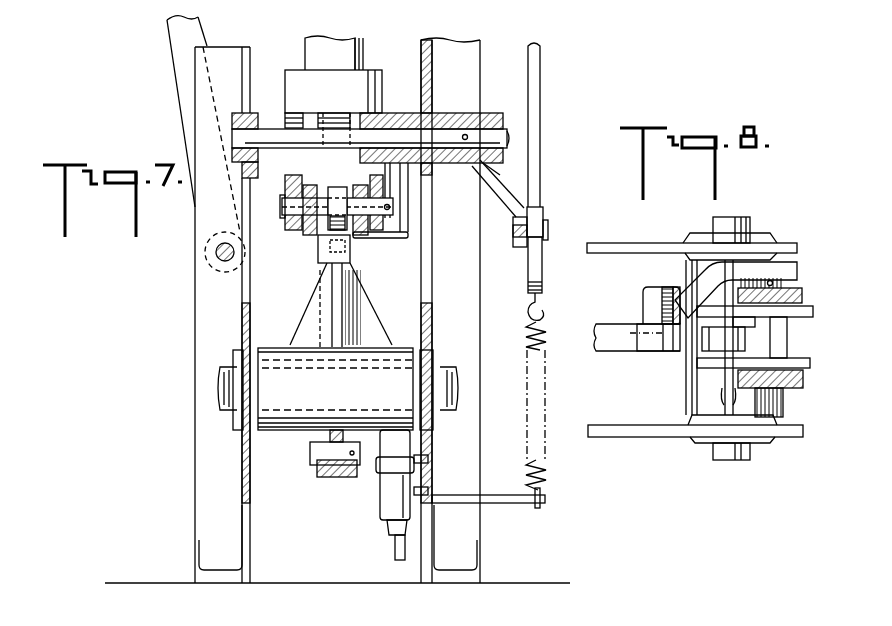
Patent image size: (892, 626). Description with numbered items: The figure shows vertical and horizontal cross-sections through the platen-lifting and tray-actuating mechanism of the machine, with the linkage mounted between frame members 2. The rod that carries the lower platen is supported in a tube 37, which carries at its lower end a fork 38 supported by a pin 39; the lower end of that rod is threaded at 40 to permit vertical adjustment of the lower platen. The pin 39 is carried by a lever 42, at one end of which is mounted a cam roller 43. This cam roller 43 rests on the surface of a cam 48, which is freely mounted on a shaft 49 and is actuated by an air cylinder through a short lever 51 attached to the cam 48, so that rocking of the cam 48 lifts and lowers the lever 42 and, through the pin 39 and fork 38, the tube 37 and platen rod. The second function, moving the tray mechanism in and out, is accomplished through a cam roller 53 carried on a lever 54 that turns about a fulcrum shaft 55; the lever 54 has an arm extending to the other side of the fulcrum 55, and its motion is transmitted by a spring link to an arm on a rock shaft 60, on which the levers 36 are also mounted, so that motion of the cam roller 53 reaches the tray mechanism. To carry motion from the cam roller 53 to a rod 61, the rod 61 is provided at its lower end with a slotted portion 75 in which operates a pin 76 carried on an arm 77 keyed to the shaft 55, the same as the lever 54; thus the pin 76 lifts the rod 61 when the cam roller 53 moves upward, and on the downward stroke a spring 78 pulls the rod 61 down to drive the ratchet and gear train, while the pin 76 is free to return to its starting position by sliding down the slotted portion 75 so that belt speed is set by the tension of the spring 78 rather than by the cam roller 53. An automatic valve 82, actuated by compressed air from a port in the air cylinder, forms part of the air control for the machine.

In FIG. 7, the frame post / side plate 2 is at (202, 310).
In FIG. 8, the frame post / side plate 2 is at (641, 244).
In FIG. 7, the lever 36 is at (173, 42).
In FIG. 7, the tube 37 is at (306, 45).
In FIG. 7, the fork 38 is at (287, 171).
In FIG. 8, the fork 38 is at (800, 288).
In FIG. 7, the pin 39 is at (284, 217).
In FIG. 8, the pin 39 is at (778, 398).
In FIG. 7, the threaded portion 40 is at (338, 114).
In FIG. 7, the lever 42 is at (356, 186).
In FIG. 8, the lever 42 is at (808, 318).
In FIG. 7, the cam roller 43 is at (340, 224).
In FIG. 8, the cam roller 43 is at (708, 341).
In FIG. 7, the cam 48 is at (313, 241).
In FIG. 8, the cam 48 is at (602, 341).
In FIG. 7, the shaft 49 is at (268, 360).
In FIG. 7, the short lever 51 is at (310, 450).
In FIG. 7, the cam roller 53 is at (318, 260).
In FIG. 8, the cam roller 53 is at (647, 346).
In FIG. 7, the lever 54 is at (390, 113).
In FIG. 8, the lever 54 is at (643, 298).
In FIG. 7, the fulcrum shaft 55 is at (268, 132).
In FIG. 7, the rock shaft 60 is at (216, 251).
In FIG. 7, the rod 61 is at (541, 54).
In FIG. 7, the slotted portion 75 is at (528, 267).
In FIG. 7, the pin 76 is at (548, 225).
In FIG. 7, the arm 77 is at (500, 183).
In FIG. 7, the spring 78 is at (525, 337).
In FIG. 7, the automatic valve 82 is at (385, 497).